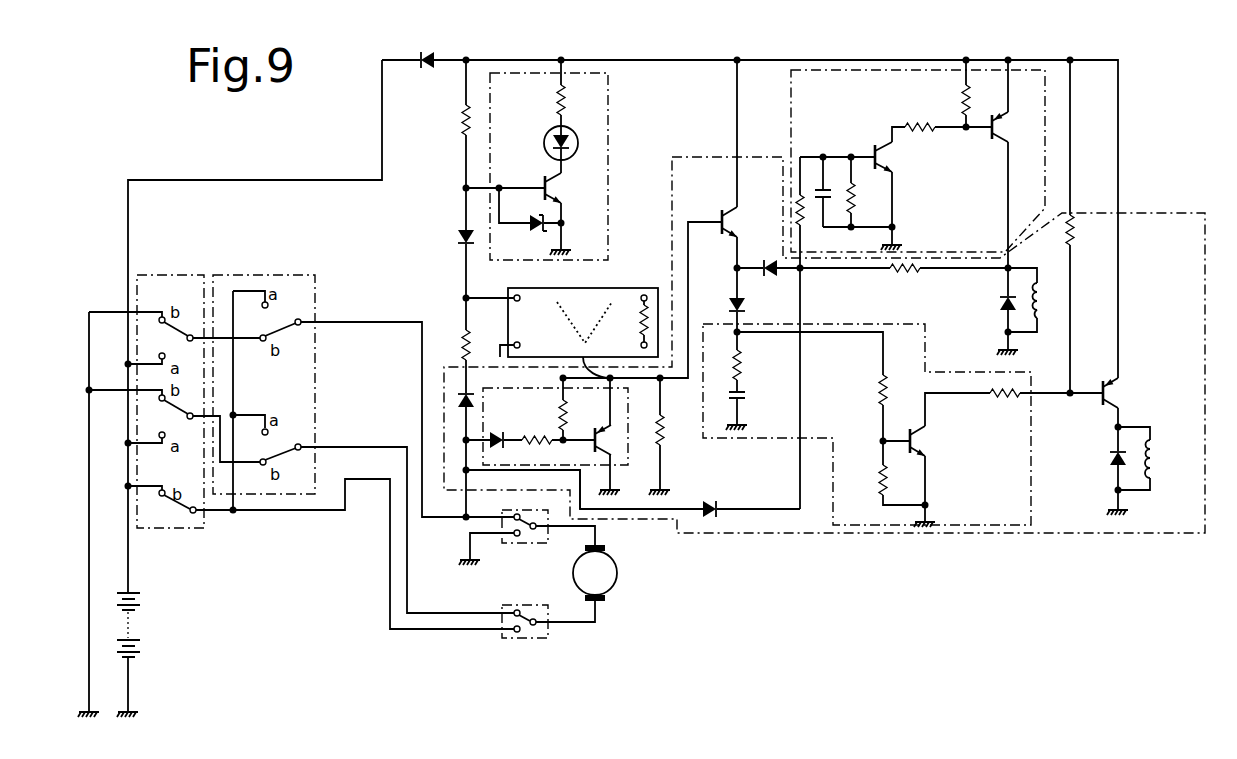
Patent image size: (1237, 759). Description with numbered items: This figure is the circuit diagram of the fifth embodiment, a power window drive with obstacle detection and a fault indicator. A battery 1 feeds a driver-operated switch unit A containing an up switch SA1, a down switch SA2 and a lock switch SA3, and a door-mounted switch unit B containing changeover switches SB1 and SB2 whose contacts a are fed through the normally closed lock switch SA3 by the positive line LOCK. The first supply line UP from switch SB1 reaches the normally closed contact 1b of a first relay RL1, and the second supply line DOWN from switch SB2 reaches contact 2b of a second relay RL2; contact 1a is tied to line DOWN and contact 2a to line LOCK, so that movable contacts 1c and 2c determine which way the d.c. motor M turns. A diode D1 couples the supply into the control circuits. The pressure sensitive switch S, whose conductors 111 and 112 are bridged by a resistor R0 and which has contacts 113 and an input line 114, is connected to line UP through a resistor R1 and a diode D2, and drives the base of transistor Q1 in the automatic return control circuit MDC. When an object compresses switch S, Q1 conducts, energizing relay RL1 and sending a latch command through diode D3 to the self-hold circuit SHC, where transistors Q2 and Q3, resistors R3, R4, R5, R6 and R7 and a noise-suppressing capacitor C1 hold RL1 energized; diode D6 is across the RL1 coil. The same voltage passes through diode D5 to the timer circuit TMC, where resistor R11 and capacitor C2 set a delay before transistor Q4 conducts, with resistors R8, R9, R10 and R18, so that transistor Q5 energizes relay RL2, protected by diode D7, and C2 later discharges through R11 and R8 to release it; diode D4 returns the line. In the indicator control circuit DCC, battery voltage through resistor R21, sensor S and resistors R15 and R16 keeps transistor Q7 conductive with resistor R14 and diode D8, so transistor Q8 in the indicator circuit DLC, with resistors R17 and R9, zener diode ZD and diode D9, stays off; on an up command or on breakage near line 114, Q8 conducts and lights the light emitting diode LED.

The battery 1 is at (140, 606).
The conductor 111 is at (573, 424).
The conductor 112 is at (521, 296).
The potentiometer contact 113 is at (510, 343).
The input line 114 is at (490, 297).
The switch unit A is at (195, 268).
The switch unit B is at (305, 268).
The up switch SA1 is at (177, 330).
The down switch SA2 is at (178, 408).
The lock switch SA3 is at (178, 514).
The up switch SB1 is at (288, 348).
The down switch SB2 is at (284, 498).
The first supply line UP is at (361, 312).
The second supply line DOWN is at (354, 437).
The lock signal line LOCK is at (358, 505).
The diode D1 is at (432, 50).
The diode D2 is at (450, 402).
The diode D3 is at (769, 258).
The diode D4 is at (717, 502).
The diode D5 is at (752, 307).
The diode D6 is at (996, 309).
The diode D7 is at (1102, 462).
The diode D8 is at (499, 430).
The diode D9 is at (450, 243).
The zener diode ZD is at (527, 236).
The light emitting diode LED is at (582, 143).
The resistor R0 is at (650, 325).
The resistor R1 is at (480, 345).
The resistor R3 is at (787, 210).
The resistor R4 is at (866, 201).
The resistor R5 is at (928, 141).
The resistor R6 is at (951, 100).
The resistor R7 is at (905, 282).
The resistor R8 is at (869, 482).
The resistor R9 is at (1005, 408).
The resistor R10 is at (1090, 231).
The resistor R11 is at (720, 365).
The resistor R14 is at (678, 433).
The resistor R15 is at (580, 415).
The resistor R16 is at (539, 430).
The resistor R17 is at (582, 100).
The resistor R18 is at (869, 390).
The resistor R21 is at (449, 121).
The capacitor C1 is at (831, 207).
The capacitor C2 is at (722, 404).
The transistor Q1 is at (716, 212).
The transistor Q2 is at (900, 163).
The transistor Q3 is at (1015, 130).
The transistor Q4 is at (932, 446).
The transistor Q5 is at (1124, 393).
The transistor Q7 is at (616, 443).
The transistor Q8 is at (540, 185).
The first relay RL1 is at (779, 412).
The second relay RL2 is at (848, 551).
The normally open contact 1a is at (500, 545).
The normally closed contact 1b is at (499, 510).
The relay contact 1c is at (543, 520).
The normally open contact 2a is at (499, 640).
The normally closed contact 2b is at (507, 603).
The relay contact 2c is at (544, 617).
The d.c. motor M is at (595, 573).
The pressure sensitive switch S is at (620, 288).
The indicator circuit DLC is at (605, 80).
The automatic return control circuit MDC is at (672, 182).
The self-hold circuit SHC is at (790, 96).
The timer circuit TMC is at (928, 350).
The indicator control circuit DCC is at (641, 480).